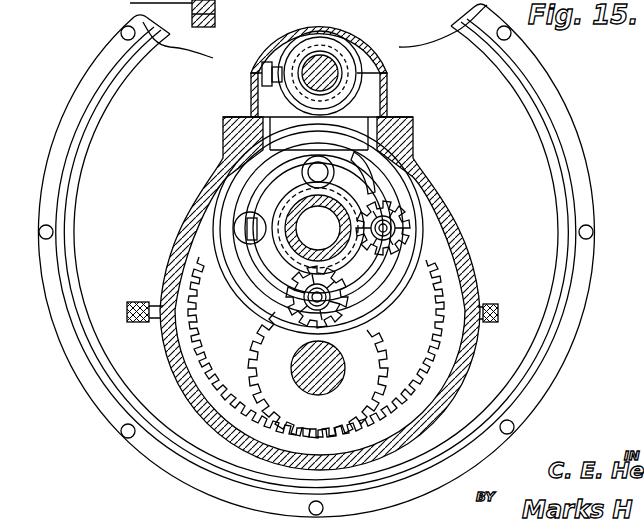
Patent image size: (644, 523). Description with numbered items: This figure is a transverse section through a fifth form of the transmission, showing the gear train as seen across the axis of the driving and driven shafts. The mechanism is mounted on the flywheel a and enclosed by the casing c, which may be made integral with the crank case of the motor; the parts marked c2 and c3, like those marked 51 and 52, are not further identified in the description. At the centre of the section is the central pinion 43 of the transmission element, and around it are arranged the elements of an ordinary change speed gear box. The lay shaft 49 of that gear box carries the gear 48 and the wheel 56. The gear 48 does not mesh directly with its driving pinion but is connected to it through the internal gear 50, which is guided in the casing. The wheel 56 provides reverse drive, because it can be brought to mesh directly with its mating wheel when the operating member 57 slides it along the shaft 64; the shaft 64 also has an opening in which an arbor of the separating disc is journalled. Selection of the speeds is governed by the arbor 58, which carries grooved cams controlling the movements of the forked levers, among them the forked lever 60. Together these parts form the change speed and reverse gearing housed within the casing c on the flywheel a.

The flywheel a is at (117, 107).
The casing c is at (50, 194).
The case wall c2 is at (255, 77).
The case wall lug c3 is at (165, 347).
The wheel 56 is at (191, 13).
The arbor 58 is at (328, 66).
The forked lever 60 is at (273, 177).
The operating member 57 is at (242, 228).
The pinion 52 is at (412, 204).
The central pinion 43 is at (395, 308).
The shaft 64 is at (327, 240).
The bracket rim 51 is at (383, 282).
The gear 48 is at (375, 360).
The lay shaft 49 is at (328, 381).
The internal gear 50 is at (445, 349).